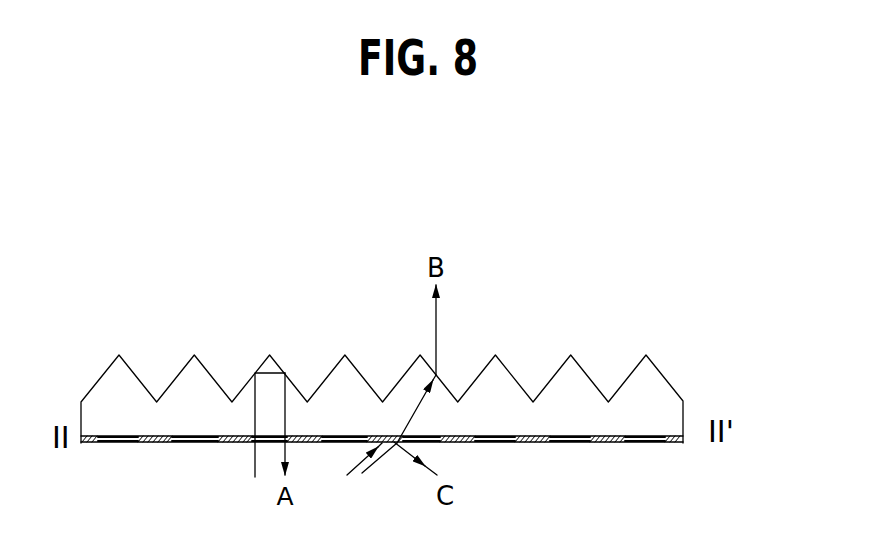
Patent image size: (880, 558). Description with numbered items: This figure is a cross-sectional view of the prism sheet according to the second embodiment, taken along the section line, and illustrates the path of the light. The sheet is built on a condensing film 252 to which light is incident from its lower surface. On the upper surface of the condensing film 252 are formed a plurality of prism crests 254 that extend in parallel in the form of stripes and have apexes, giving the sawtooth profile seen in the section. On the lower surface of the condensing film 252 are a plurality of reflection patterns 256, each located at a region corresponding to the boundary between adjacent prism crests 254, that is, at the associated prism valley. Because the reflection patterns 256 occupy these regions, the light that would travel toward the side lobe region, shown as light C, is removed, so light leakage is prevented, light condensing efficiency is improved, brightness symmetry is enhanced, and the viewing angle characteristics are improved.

The condensing film 252 is at (683, 443).
The prism crests 254 is at (657, 393).
The reflection patterns 256 is at (603, 443).